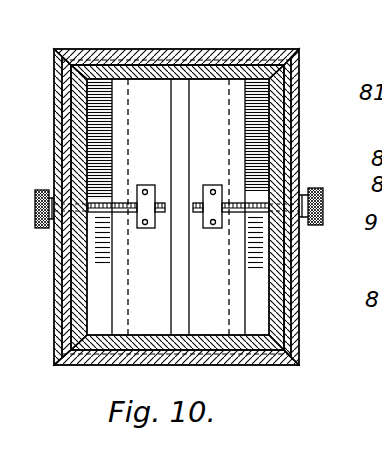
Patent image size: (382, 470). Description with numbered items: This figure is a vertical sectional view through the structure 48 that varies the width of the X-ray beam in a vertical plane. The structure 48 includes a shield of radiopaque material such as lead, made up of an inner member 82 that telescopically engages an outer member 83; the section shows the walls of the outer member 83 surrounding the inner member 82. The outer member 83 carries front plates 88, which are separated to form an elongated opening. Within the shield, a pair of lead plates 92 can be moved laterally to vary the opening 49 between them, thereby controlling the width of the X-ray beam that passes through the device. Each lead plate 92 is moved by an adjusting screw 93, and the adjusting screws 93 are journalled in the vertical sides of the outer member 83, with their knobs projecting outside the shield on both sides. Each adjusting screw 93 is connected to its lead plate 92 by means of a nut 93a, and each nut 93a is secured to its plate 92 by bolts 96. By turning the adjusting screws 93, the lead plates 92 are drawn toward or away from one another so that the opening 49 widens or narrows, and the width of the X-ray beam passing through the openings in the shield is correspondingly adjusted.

The structure 48 is at (298, 48).
The opening 49 is at (203, 58).
The inner member 82 is at (276, 97).
The outer member 83 is at (145, 54).
The front plates 88 is at (97, 237).
The lead plates 92 is at (224, 92).
The adjusting screw 93 is at (40, 190).
The nut 93a is at (153, 228).
The bolts 96 is at (212, 189).